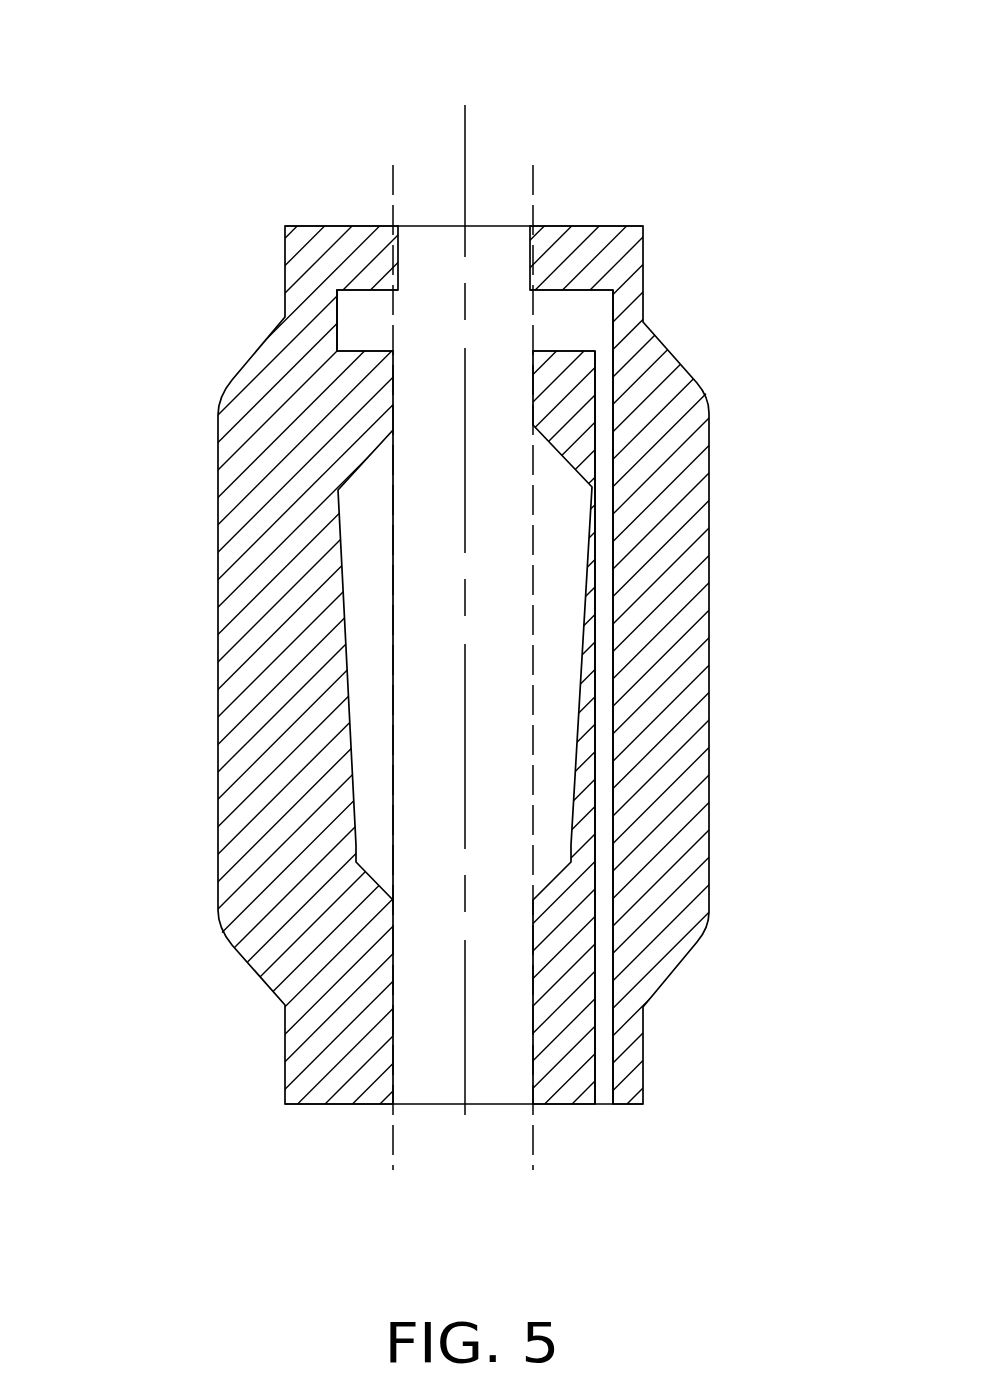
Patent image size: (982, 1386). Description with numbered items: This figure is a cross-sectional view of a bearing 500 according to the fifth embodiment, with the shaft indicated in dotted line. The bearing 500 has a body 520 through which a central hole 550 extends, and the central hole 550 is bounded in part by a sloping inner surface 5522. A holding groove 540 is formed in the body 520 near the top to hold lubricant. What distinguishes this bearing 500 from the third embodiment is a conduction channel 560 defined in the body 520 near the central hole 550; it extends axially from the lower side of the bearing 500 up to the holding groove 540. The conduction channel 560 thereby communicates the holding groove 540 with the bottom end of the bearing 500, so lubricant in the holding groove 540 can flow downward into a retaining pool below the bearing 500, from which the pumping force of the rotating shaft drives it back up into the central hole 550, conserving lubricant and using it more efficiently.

The bearing 500 is at (491, 586).
The body 520 is at (688, 583).
The holding groove 540 is at (595, 320).
The central hole 550 is at (370, 690).
The sloping inner surface 5522 is at (340, 580).
The conduction channel 560 is at (603, 973).